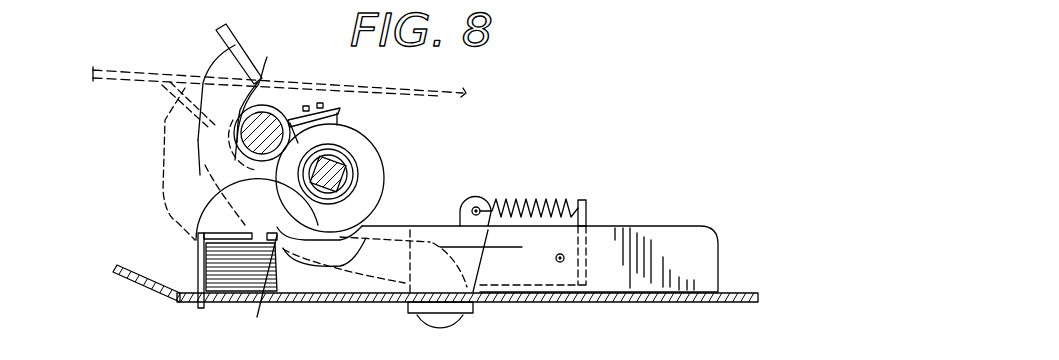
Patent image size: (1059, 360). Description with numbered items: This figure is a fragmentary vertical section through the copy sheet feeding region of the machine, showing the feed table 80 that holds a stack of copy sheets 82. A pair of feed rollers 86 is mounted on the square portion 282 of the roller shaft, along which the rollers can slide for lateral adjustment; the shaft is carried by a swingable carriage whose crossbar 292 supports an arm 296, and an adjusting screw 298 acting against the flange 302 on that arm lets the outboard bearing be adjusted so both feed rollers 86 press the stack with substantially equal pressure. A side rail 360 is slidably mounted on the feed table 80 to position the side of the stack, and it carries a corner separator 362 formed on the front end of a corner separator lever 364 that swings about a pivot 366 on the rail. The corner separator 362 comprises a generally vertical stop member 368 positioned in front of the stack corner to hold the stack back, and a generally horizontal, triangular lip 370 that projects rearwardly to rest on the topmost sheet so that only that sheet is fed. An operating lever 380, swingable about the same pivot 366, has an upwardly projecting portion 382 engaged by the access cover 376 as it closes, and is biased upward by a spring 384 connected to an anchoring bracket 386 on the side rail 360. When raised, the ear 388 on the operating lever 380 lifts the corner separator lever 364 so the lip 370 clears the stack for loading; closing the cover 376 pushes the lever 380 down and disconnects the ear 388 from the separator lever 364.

The feed table 80 is at (741, 296).
The copy sheets 82 is at (373, 250).
The feed rollers 86 is at (377, 160).
The square portion of the shaft 282 is at (360, 143).
The crossbar 292 is at (261, 96).
The arm 296 is at (273, 108).
The adjusting screw 298 is at (320, 103).
The flange 302 is at (341, 113).
The side rail 360 is at (622, 224).
The corner separator 362 is at (190, 232).
The corner separator lever 364 is at (352, 303).
The pivot 366 is at (447, 314).
The stop member 368 is at (196, 273).
The lip 370 is at (218, 237).
The access cover 376 is at (430, 90).
The operating lever 380 is at (193, 134).
The upwardly projecting portion 382 is at (255, 14).
The spring 384 is at (517, 203).
The anchoring bracket 386 is at (582, 202).
The ear 388 is at (257, 288).